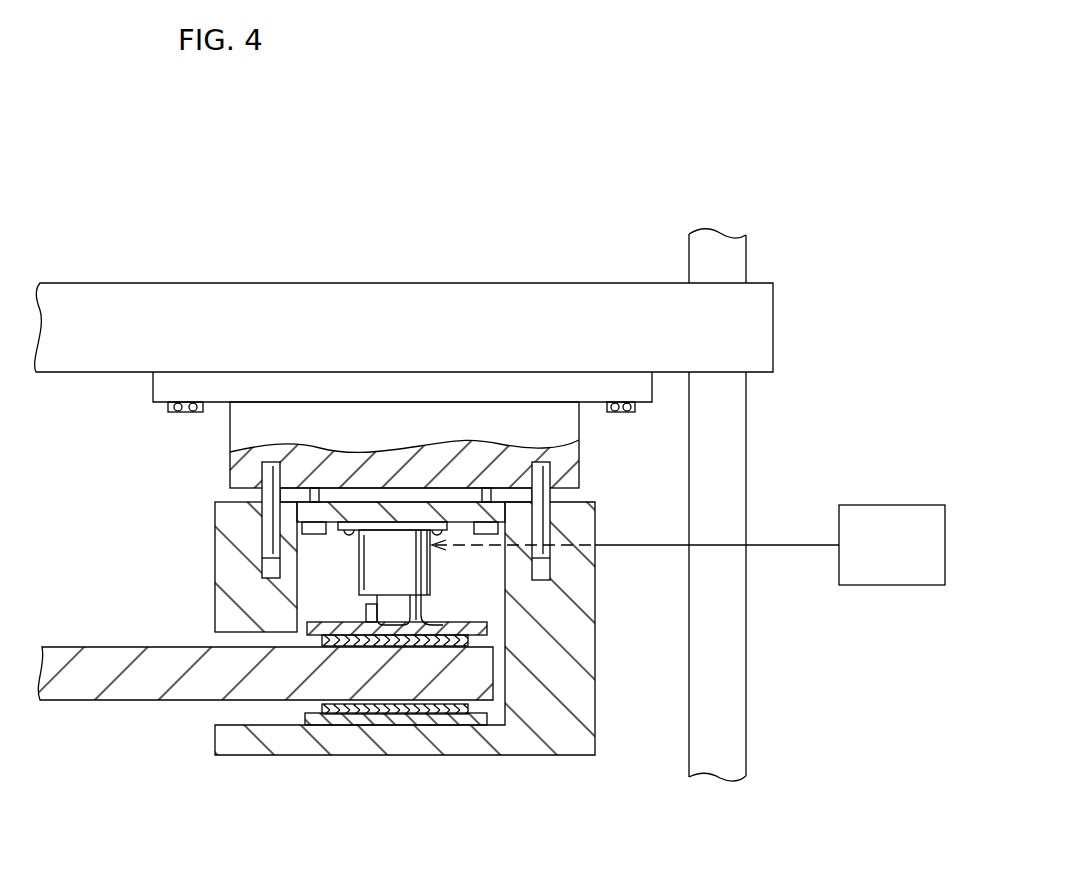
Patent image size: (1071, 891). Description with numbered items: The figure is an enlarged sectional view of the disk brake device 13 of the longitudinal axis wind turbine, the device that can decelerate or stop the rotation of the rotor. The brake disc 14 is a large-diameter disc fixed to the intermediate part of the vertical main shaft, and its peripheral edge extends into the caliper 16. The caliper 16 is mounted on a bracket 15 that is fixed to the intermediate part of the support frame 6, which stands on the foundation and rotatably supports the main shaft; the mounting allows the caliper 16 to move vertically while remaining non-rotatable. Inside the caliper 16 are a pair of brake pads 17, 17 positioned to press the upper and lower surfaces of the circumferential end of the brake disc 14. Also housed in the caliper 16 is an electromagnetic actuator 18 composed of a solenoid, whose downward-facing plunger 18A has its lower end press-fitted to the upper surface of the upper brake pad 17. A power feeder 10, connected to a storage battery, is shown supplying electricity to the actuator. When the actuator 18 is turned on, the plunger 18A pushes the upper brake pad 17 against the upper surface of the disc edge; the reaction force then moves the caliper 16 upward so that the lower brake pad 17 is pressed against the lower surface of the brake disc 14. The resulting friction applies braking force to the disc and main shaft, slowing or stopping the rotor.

The support frame 6 is at (750, 437).
The power feeder 10 is at (896, 586).
The disk brake device 13 is at (422, 772).
The brake disc 14 is at (95, 700).
The bracket 15 is at (228, 441).
The caliper 16 is at (548, 757).
The brake pads 17 is at (306, 632).
The electromagnetic actuator 18 is at (360, 573).
The plunger 18A is at (375, 610).